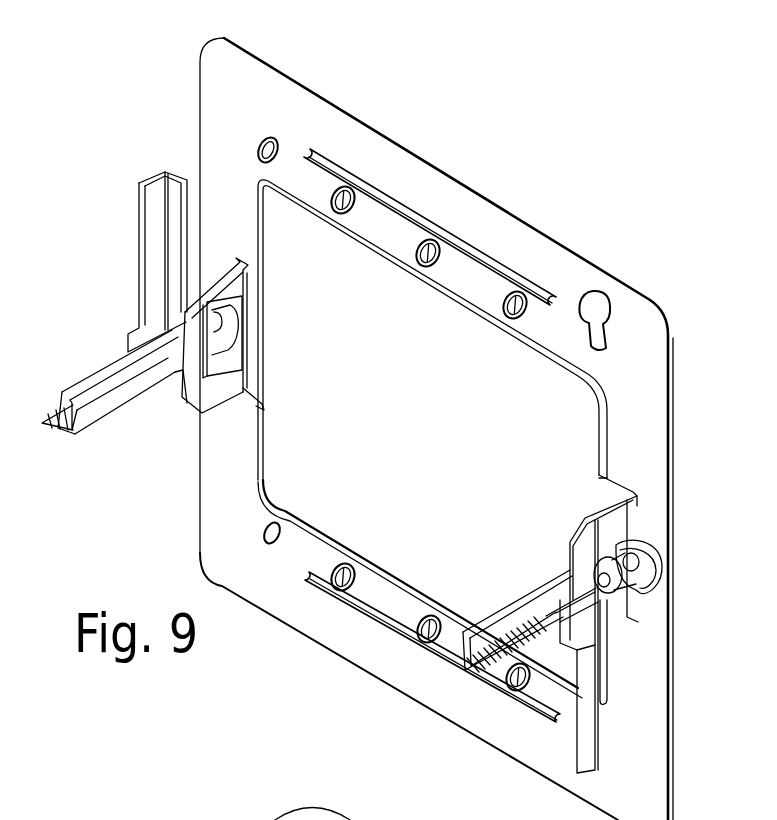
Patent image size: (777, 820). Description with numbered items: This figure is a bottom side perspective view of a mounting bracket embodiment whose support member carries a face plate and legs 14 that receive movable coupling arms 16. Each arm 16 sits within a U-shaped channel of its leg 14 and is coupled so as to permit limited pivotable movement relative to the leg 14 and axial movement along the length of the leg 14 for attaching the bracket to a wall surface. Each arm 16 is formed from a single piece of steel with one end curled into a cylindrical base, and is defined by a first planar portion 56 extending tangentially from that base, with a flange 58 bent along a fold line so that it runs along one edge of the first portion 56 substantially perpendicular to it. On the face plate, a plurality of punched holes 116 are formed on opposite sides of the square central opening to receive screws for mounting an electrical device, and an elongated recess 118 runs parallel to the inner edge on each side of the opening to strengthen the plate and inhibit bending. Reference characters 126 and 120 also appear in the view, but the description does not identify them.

The leg 14 is at (376, 427).
The coupling arm 16 is at (76, 448).
The first planar portion 56 is at (139, 228).
The flange 58 is at (181, 180).
The punched hole 116 is at (343, 216).
The elongated recess 118 is at (486, 250).
The component 126 is at (194, 815).
The component 120 is at (461, 816).